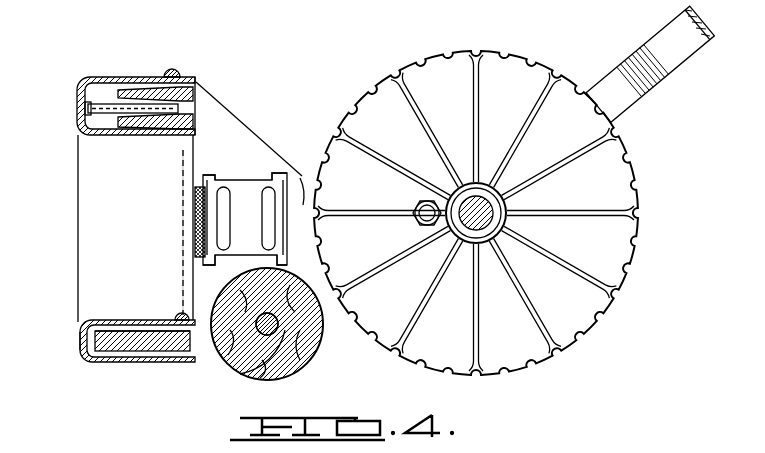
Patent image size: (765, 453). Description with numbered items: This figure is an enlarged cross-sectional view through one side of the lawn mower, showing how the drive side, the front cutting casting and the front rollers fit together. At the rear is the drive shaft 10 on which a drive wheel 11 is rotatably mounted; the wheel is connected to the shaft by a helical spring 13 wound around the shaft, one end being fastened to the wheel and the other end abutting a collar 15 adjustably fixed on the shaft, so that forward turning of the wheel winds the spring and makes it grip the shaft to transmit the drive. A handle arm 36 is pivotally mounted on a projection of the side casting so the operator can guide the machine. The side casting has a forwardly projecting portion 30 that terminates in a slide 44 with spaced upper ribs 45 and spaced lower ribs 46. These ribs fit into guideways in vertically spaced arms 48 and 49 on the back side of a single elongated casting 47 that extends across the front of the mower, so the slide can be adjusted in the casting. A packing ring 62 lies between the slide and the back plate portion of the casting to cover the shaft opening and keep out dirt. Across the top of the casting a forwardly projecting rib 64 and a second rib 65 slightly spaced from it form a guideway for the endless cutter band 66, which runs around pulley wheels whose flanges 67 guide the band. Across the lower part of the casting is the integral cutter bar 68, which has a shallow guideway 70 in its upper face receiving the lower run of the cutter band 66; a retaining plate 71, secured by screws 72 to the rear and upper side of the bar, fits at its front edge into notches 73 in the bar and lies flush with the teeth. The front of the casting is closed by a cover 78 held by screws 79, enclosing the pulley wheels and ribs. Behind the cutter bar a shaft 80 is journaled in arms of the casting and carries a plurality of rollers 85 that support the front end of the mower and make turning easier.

The drive shaft 10 is at (498, 215).
The drive wheel 11 is at (628, 145).
The helical spring 13 is at (478, 196).
The collar 15 is at (505, 193).
The forwardly projecting portion 30 is at (318, 178).
The handle arm 36 is at (628, 72).
The slide 44 is at (248, 185).
The upper ribs 45 is at (210, 175).
The lower ribs 46 is at (203, 262).
The casting 47 is at (198, 80).
The arm 48 is at (240, 120).
The arm 49 is at (224, 333).
The packing ring 62 is at (197, 200).
The rib 64 is at (140, 86).
The second rib 65 is at (150, 130).
The endless cutter band 66 is at (88, 110).
The flange 67 is at (92, 110).
The cutter bar 68 is at (122, 352).
The guideway 70 is at (86, 358).
The retaining plate 71 is at (118, 330).
The screw 72 is at (180, 316).
The notch 73 is at (82, 326).
The cover 78 is at (80, 228).
The screw 79 is at (175, 72).
The shaft 80 is at (280, 330).
The roller 85 is at (262, 358).